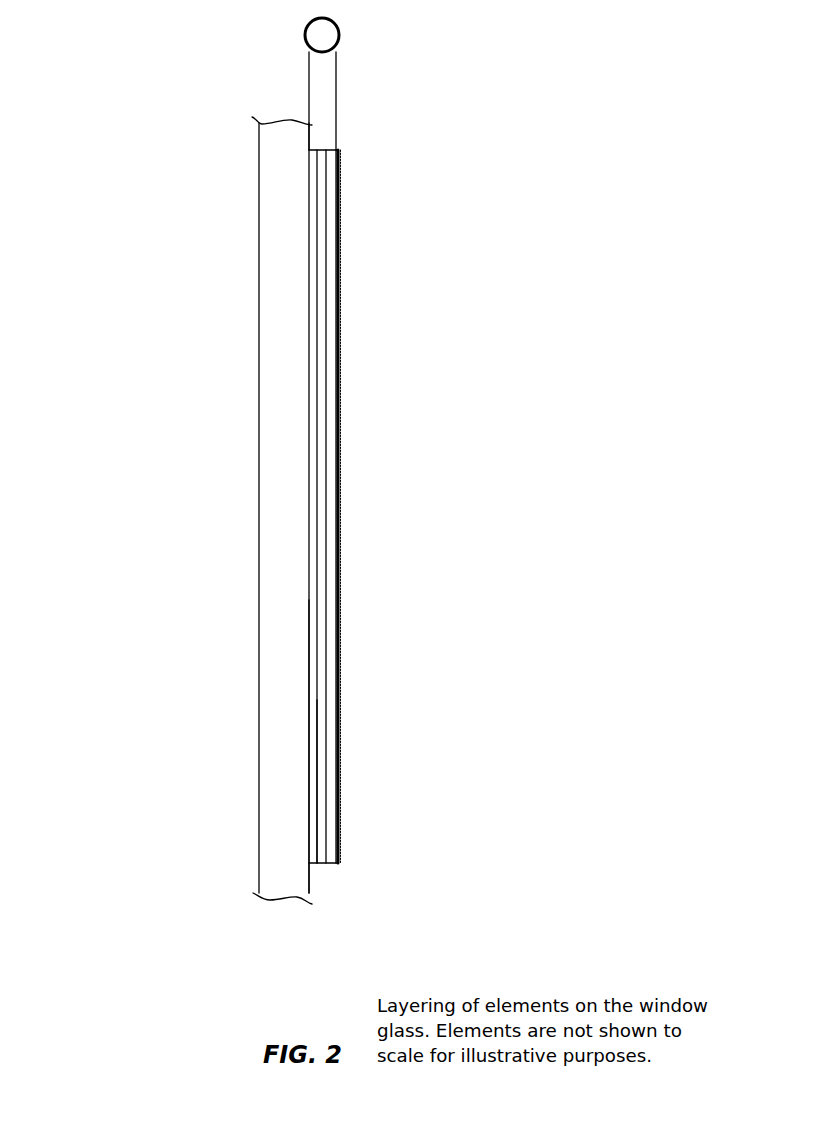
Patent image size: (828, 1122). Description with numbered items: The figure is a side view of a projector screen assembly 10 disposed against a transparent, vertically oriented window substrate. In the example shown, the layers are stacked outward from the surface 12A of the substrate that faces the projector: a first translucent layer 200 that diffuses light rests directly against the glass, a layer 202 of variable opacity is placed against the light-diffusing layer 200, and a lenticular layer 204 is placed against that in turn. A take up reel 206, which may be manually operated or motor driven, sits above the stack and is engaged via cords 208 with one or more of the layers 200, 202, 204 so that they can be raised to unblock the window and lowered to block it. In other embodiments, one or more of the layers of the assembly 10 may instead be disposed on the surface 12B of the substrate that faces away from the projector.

The projector screen assembly 10 is at (389, 408).
The surface of the substrate facing the projector 12A is at (312, 894).
The surface of the substrate facing away from the projector 12B is at (261, 838).
The first translucent layer 200 is at (316, 198).
The layer of variable opacity 202 is at (328, 873).
The lenticular layer 204 is at (338, 200).
The take up reel 206 is at (340, 34).
The cords 208 is at (327, 98).